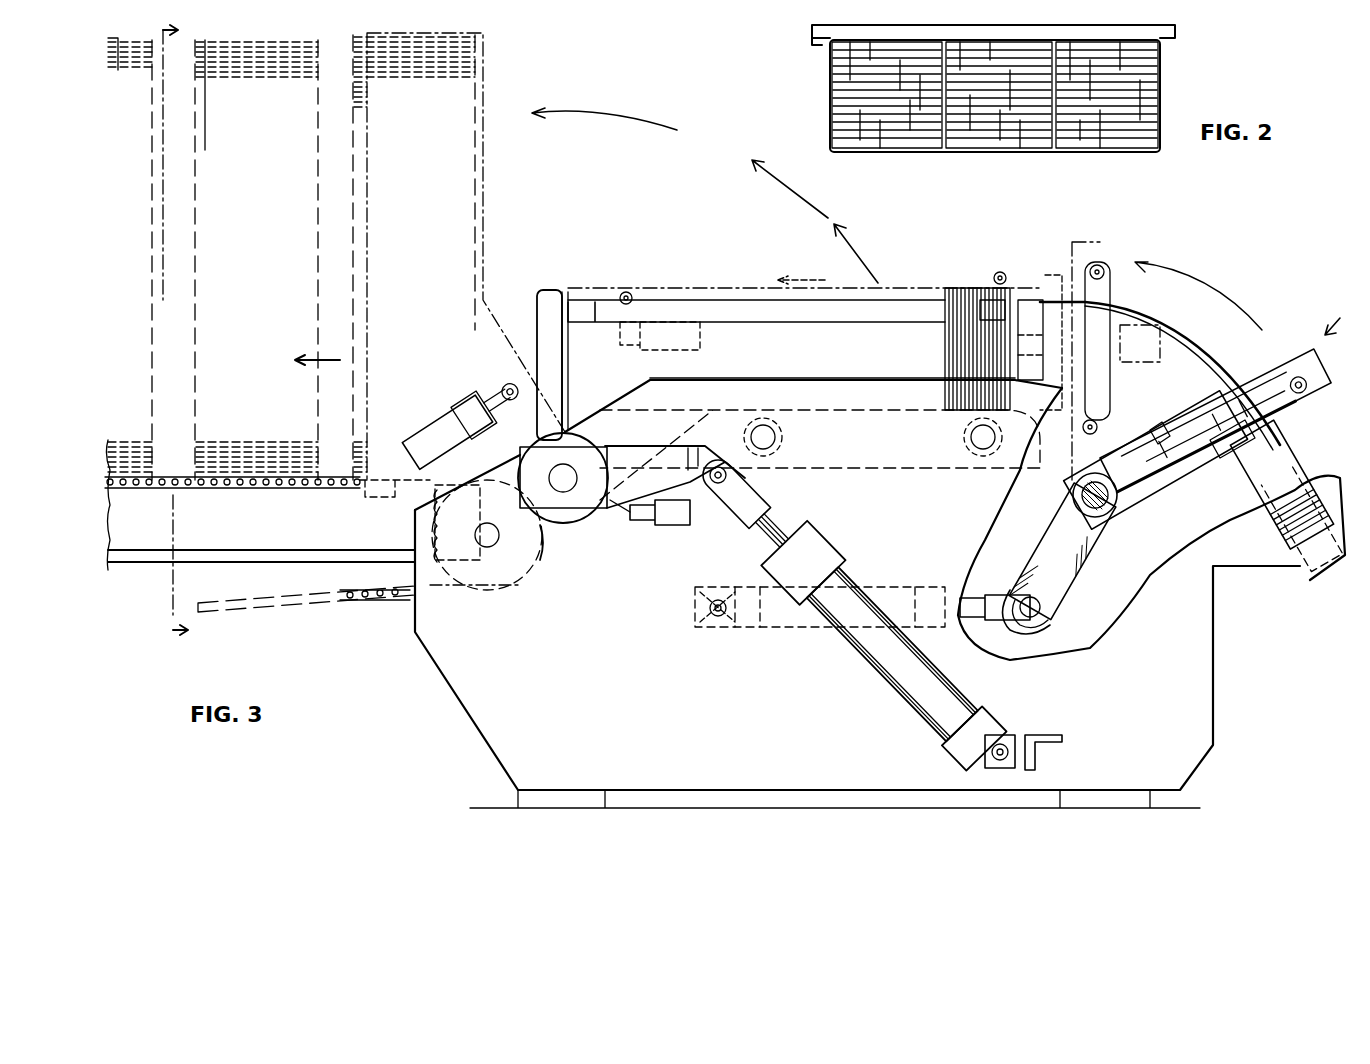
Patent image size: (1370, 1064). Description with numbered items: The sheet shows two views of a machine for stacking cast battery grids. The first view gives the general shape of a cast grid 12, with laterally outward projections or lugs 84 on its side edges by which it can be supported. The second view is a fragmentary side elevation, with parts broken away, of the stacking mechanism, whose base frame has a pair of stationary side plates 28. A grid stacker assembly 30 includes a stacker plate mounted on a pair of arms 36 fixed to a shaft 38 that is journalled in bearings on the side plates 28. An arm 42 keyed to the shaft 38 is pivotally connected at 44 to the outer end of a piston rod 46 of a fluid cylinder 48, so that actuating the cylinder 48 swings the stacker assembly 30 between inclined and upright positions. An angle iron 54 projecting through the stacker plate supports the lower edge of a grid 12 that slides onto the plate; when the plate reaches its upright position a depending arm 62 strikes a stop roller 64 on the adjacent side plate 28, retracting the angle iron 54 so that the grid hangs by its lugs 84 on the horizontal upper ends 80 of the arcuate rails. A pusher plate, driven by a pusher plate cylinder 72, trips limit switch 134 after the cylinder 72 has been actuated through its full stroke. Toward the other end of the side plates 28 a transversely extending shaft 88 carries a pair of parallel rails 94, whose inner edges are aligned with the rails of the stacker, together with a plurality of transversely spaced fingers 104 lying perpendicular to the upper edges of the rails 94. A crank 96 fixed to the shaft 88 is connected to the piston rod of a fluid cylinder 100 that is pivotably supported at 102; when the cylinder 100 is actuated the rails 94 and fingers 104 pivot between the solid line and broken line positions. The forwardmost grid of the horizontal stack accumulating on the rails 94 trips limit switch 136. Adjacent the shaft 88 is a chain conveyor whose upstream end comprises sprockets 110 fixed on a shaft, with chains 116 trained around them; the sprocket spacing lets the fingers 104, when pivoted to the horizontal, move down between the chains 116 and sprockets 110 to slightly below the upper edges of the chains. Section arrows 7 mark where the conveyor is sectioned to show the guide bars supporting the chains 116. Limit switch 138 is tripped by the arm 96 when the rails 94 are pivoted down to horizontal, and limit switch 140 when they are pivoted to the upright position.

In FIG. 3, the section line 7- 7 is at (187, 328).
In FIG. 2, the grid 12 is at (1178, 64).
In FIG. 3, the grid 12 is at (144, 241).
In FIG. 3, the side plates 28 is at (1213, 630).
In FIG. 3, the grid stacker assembly 30 is at (1114, 236).
In FIG. 3, the arms 36 is at (1130, 490).
In FIG. 3, the shaft 38 is at (1108, 510).
In FIG. 3, the arm 42 is at (1080, 555).
In FIG. 3, the pivotal connection 44 is at (1042, 607).
In FIG. 3, the piston rod 46 is at (1022, 628).
In FIG. 3, the fluid cylinder 48 is at (893, 587).
In FIG. 3, the angle iron 54 is at (1158, 428).
In FIG. 3, the depending arm 62 is at (1120, 420).
In FIG. 3, the stop roller 64 is at (1083, 430).
In FIG. 3, the pusher plate cylinder 72 is at (1185, 335).
In FIG. 3, the upper ends of rails 80 is at (1035, 298).
In FIG. 2, the lugs 84 is at (812, 38).
In FIG. 3, the lugs 84 is at (1270, 370).
In FIG. 3, the shaft 88 is at (570, 505).
In FIG. 3, the parallel rails 94 is at (877, 328).
In FIG. 3, the crank 96 is at (622, 448).
In FIG. 3, the fluid cylinder 100 is at (885, 665).
In FIG. 3, the pivot support 102 is at (1000, 765).
In FIG. 3, the fingers 104 is at (552, 290).
In FIG. 3, the sprockets 110 is at (504, 590).
In FIG. 3, the chains 116 is at (279, 487).
In FIG. 3, the limit switch 134 is at (1012, 255).
In FIG. 3, the limit switch 136 is at (627, 292).
In FIG. 3, the limit switch 138 is at (650, 522).
In FIG. 3, the limit switch 140 is at (468, 412).